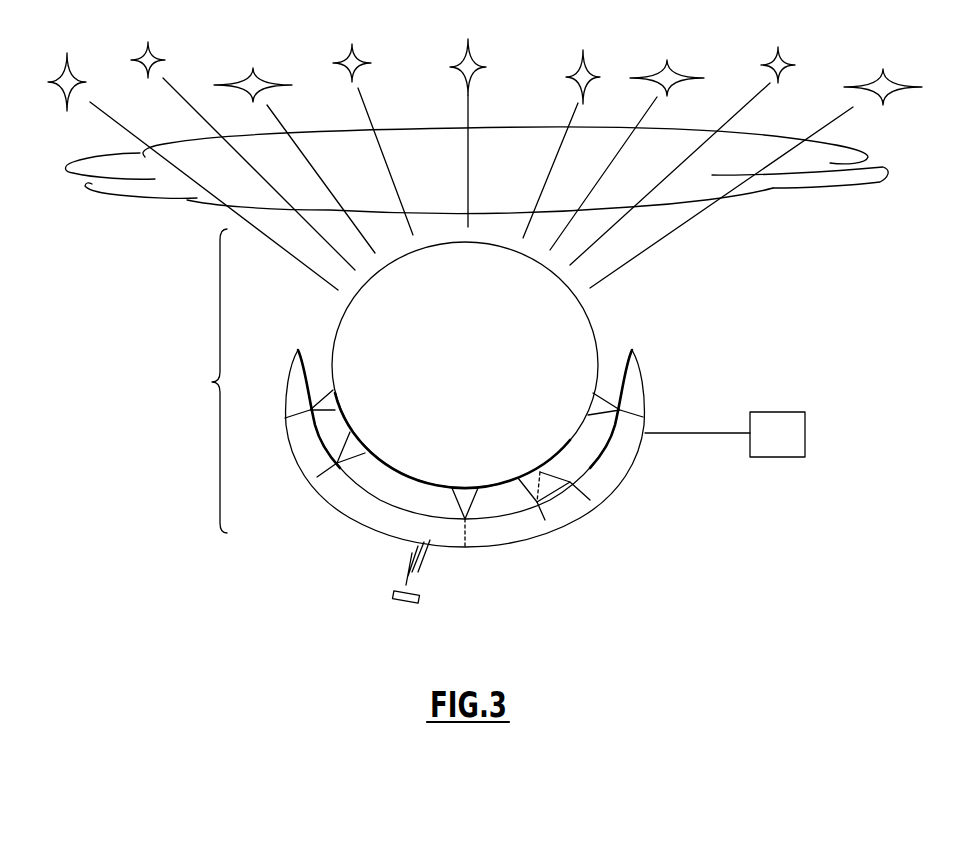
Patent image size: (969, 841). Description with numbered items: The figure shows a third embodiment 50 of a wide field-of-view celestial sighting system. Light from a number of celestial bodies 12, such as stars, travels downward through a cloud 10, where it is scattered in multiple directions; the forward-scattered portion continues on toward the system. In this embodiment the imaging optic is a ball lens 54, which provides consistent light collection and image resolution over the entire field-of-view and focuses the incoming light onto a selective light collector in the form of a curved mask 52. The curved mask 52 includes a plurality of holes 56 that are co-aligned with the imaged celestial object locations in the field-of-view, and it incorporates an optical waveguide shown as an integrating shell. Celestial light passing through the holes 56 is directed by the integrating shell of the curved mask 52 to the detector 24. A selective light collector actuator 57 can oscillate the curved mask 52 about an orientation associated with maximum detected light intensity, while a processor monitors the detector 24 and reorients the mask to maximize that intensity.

The cloud 10 is at (108, 198).
The celestial body 12 is at (346, 57).
The detector 24 is at (418, 598).
The third embodiment of wide field-of-view celestial sighting system 50 is at (204, 381).
The curved mask 52 is at (287, 378).
The ball lens 54 is at (333, 332).
The holes 56 is at (310, 412).
The selective light collector actuator 57 is at (792, 447).